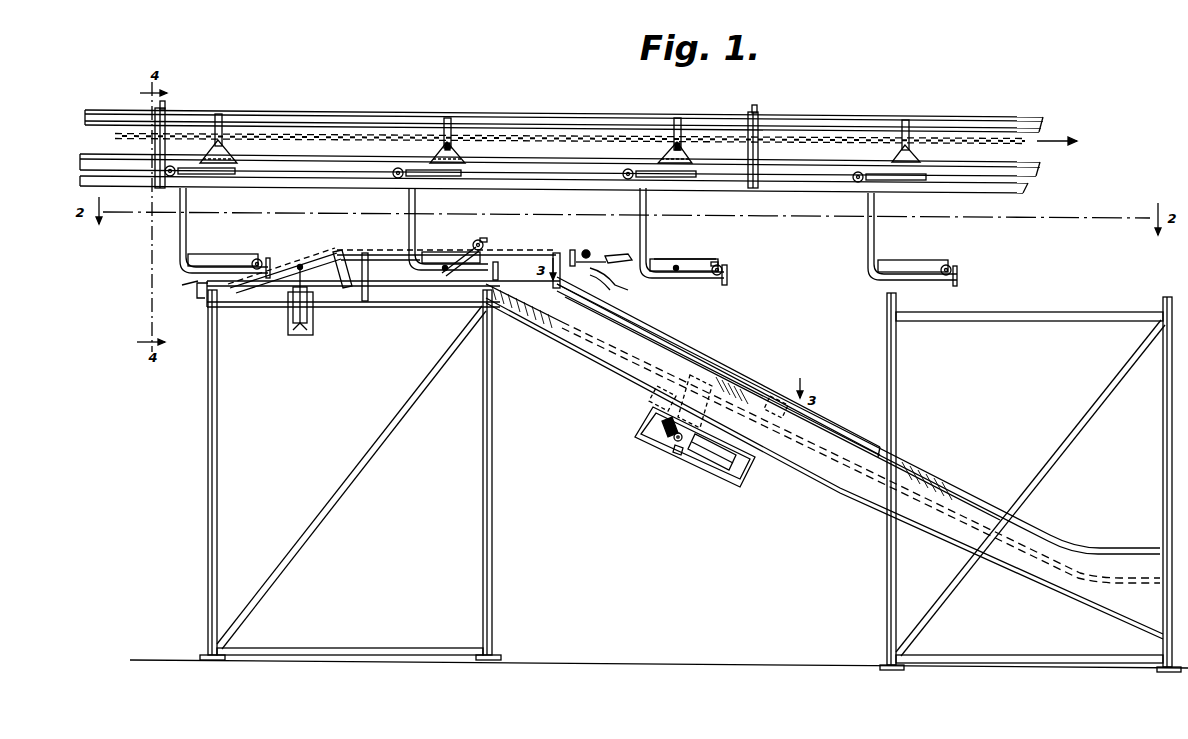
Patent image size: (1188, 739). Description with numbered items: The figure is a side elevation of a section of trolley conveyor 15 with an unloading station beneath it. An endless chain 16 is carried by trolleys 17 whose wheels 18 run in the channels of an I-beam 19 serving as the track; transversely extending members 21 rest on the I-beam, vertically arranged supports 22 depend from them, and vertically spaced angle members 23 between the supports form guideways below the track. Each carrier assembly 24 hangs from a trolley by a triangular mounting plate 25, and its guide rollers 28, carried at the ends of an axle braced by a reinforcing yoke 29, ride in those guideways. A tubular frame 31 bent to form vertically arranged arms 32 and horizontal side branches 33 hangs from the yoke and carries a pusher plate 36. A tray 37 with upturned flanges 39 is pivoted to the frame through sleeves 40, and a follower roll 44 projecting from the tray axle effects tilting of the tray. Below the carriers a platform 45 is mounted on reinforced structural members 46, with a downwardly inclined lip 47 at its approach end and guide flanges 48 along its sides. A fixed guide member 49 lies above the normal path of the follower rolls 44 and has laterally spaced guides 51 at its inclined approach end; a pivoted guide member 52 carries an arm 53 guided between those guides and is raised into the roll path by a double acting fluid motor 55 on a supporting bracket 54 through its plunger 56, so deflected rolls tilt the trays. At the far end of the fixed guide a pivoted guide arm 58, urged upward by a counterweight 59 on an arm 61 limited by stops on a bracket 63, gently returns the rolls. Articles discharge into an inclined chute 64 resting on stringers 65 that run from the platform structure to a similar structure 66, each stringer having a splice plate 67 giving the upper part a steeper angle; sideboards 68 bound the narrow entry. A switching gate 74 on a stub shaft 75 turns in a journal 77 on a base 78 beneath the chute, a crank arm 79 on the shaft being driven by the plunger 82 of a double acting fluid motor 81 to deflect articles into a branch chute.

The trolley conveyor 15 is at (564, 110).
The endless chain 16 is at (565, 134).
The trolley 17 is at (226, 124).
The wheels 18 is at (218, 116).
The I-beam 19 is at (388, 119).
The transversely extending member 21 is at (166, 106).
The vertically arranged support 22 is at (156, 143).
The angle members 23 is at (348, 172).
The carrier assembly 24 is at (187, 241).
The triangular mounting plate 25 is at (452, 146).
The guide rollers 28 is at (398, 179).
The reinforcing yoke 29 is at (460, 177).
The tubular frame 31 is at (418, 239).
The vertically arranged arms 32 is at (417, 198).
The side branches 33 is at (453, 272).
The pusher plate 36 is at (499, 272).
The tray 37 is at (483, 240).
The upturned flanges 39 is at (456, 252).
The sleeves 40 is at (444, 272).
The follower roll 44 is at (488, 243).
The platform 45 is at (410, 294).
The structural members 46 is at (218, 430).
The downwardly inclined lip 47 is at (189, 288).
The guide flanges 48 is at (448, 270).
The guide member 49 is at (348, 252).
The guides 51 is at (363, 300).
The guide member 52 is at (310, 264).
The arm 53 is at (343, 272).
The supporting bracket 54 is at (313, 328).
The double acting fluid motor 55 is at (296, 315).
The plunger 56 is at (296, 277).
The guide arm 58 is at (622, 256).
The counterweight 59 is at (574, 251).
The arm 61 is at (607, 281).
The bracket 63 is at (590, 251).
The inclined chute 64 is at (842, 430).
The stringers 65 is at (828, 472).
The supporting structure 66 is at (885, 601).
The splice plate 67 is at (708, 420).
The sideboards 68 is at (534, 304).
The switching gate 74 is at (700, 348).
The stub shaft 75 is at (720, 375).
The journal 77 is at (655, 443).
The base 78 is at (705, 470).
The crank arm 79 is at (674, 442).
The double acting fluid motor 81 is at (704, 466).
The plunger 82 is at (680, 456).